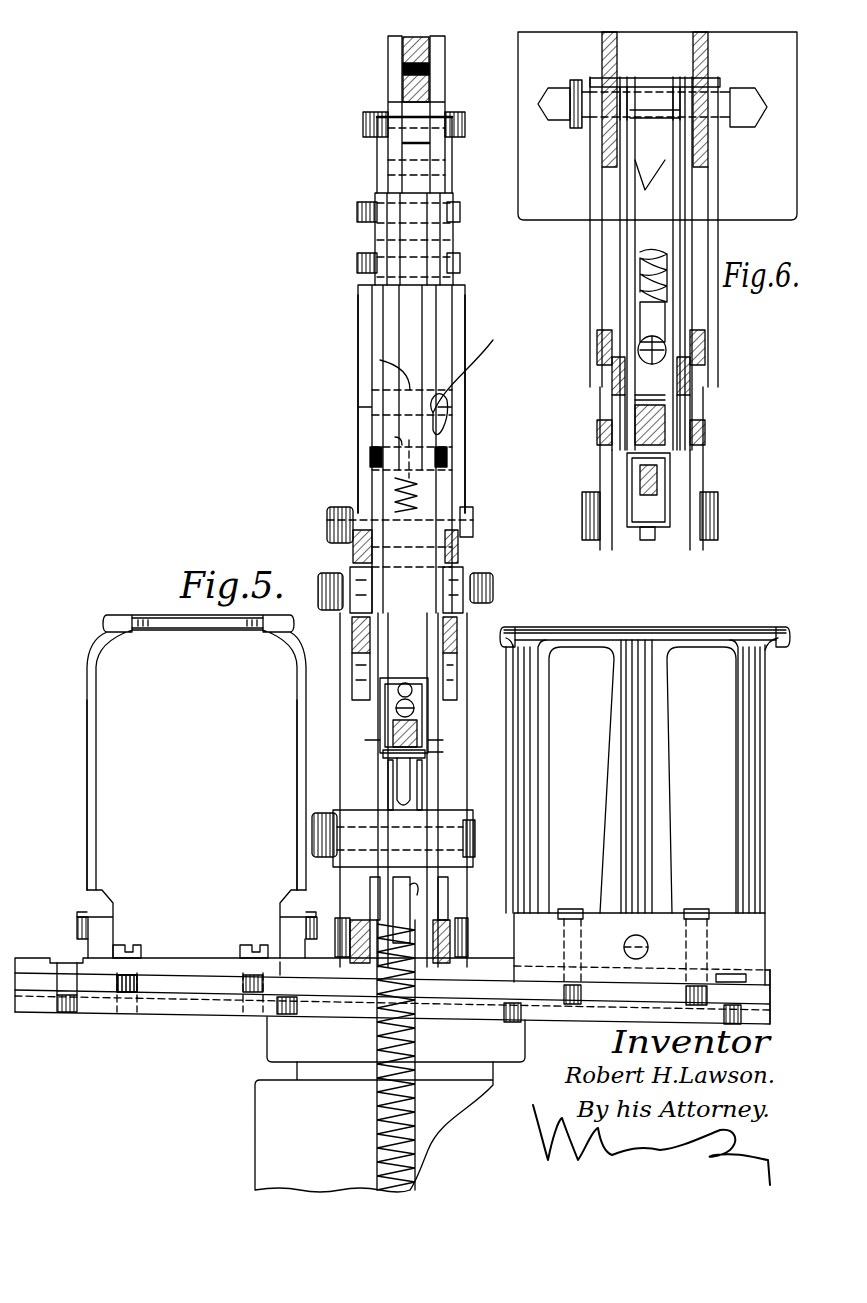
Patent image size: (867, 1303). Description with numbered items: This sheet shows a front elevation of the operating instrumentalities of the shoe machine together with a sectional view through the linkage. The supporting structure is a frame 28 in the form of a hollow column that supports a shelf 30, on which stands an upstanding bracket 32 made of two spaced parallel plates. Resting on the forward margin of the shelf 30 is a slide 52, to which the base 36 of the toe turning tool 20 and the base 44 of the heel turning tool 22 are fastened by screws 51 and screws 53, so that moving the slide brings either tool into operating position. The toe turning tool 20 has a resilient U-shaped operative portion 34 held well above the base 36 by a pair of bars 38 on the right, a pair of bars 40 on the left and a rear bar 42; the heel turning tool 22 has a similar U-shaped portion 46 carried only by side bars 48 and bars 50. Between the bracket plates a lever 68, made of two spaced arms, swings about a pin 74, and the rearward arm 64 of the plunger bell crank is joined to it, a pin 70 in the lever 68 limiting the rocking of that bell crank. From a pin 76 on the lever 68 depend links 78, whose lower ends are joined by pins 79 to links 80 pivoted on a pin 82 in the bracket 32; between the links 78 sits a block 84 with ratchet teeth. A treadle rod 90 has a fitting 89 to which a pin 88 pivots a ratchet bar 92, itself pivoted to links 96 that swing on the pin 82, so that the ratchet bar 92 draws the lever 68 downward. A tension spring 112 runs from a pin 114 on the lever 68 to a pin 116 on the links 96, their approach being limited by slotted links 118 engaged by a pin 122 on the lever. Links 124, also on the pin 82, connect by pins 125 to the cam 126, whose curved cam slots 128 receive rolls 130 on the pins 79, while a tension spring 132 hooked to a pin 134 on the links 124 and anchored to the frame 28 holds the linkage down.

In FIG. 5, the toe turning tool 20 is at (770, 614).
In FIG. 5, the heel turning tool 22 is at (112, 602).
In FIG. 5, the frame 28 is at (264, 1133).
In FIG. 5, the shelf 30 is at (152, 1016).
In FIG. 5, the bracket 32 is at (362, 424).
In FIG. 6, the bracket 32 is at (696, 42).
In FIG. 5, the U-shaped operative portion 34 is at (709, 636).
In FIG. 5, the base 36 is at (740, 938).
In FIG. 5, the pair of bars 38 is at (745, 714).
In FIG. 5, the pair of bars 40 is at (522, 754).
In FIG. 5, the bar 42 is at (664, 721).
In FIG. 5, the base 44 is at (175, 960).
In FIG. 5, the U-shaped portion 46 is at (205, 632).
In FIG. 5, the pair of bars 48 is at (296, 773).
In FIG. 5, the pair of bars 50 is at (92, 825).
In FIG. 5, the screws 51 is at (692, 948).
In FIG. 5, the slide 52 is at (223, 996).
In FIG. 5, the screws 53 is at (135, 946).
In FIG. 5, the arm 64 is at (430, 86).
In FIG. 5, the lever 68 is at (398, 162).
In FIG. 5, the pin 70 is at (412, 74).
In FIG. 5, the pin 74 is at (332, 534).
In FIG. 5, the pin 76 is at (362, 128).
In FIG. 5, the links 78 is at (380, 182).
In FIG. 5, the pins 79 is at (488, 594).
In FIG. 5, the links 80 is at (352, 742).
In FIG. 6, the links 80 is at (595, 197).
In FIG. 5, the pin 82 is at (470, 840).
In FIG. 6, the pin 82 is at (567, 104).
In FIG. 5, the block 84 is at (408, 235).
In FIG. 5, the pin 88 is at (393, 724).
In FIG. 6, the pin 88 is at (672, 504).
In FIG. 5, the fitting 89 is at (390, 759).
In FIG. 6, the fitting 89 is at (628, 482).
In FIG. 5, the treadle rod 90 is at (400, 794).
In FIG. 5, the ratchet bar 92 is at (410, 315).
In FIG. 6, the ratchet bar 92 is at (652, 426).
In FIG. 5, the links 96 is at (386, 805).
In FIG. 6, the links 96 is at (672, 167).
In FIG. 5, the tension spring 112 is at (392, 474).
In FIG. 6, the tension spring 112 is at (668, 270).
In FIG. 5, the pin 114 is at (395, 439).
In FIG. 5, the pin 116 is at (432, 760).
In FIG. 6, the pin 116 is at (665, 329).
In FIG. 5, the links 118 is at (382, 694).
In FIG. 6, the links 118 is at (628, 418).
In FIG. 5, the pin 122 is at (380, 360).
In FIG. 5, the links 124 is at (345, 892).
In FIG. 6, the links 124 is at (692, 82).
In FIG. 5, the pins 125 is at (330, 937).
In FIG. 6, the pins 125 is at (584, 504).
In FIG. 5, the cam 126 is at (358, 539).
In FIG. 6, the cam 126 is at (600, 349).
In FIG. 6, the cam slots 128 is at (614, 379).
In FIG. 5, the rolls 130 is at (358, 594).
In FIG. 5, the tension spring 132 is at (382, 1104).
In FIG. 6, the tension spring 132 is at (632, 404).
In FIG. 5, the pin 134 is at (420, 886).
In FIG. 6, the pin 134 is at (640, 356).